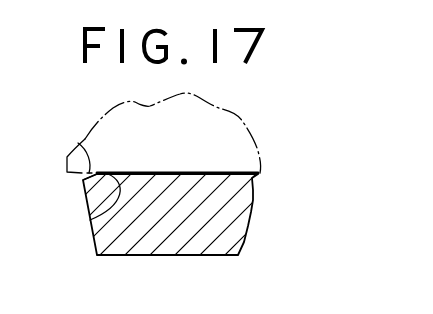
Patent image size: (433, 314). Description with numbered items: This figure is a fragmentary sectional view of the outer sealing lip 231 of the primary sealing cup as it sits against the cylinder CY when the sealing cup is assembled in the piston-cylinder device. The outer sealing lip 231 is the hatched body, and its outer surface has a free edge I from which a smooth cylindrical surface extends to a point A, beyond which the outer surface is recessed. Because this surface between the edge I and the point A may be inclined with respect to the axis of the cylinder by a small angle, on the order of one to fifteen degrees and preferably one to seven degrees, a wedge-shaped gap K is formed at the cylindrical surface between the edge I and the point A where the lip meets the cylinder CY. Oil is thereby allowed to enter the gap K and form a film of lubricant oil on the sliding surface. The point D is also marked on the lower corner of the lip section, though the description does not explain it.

The outer sealing lip 231 is at (190, 223).
The point A is at (93, 218).
The cylinder CY is at (207, 148).
The wedge-shaped gap K is at (78, 143).
The free edge I is at (83, 180).
The bottom corner point D is at (97, 256).